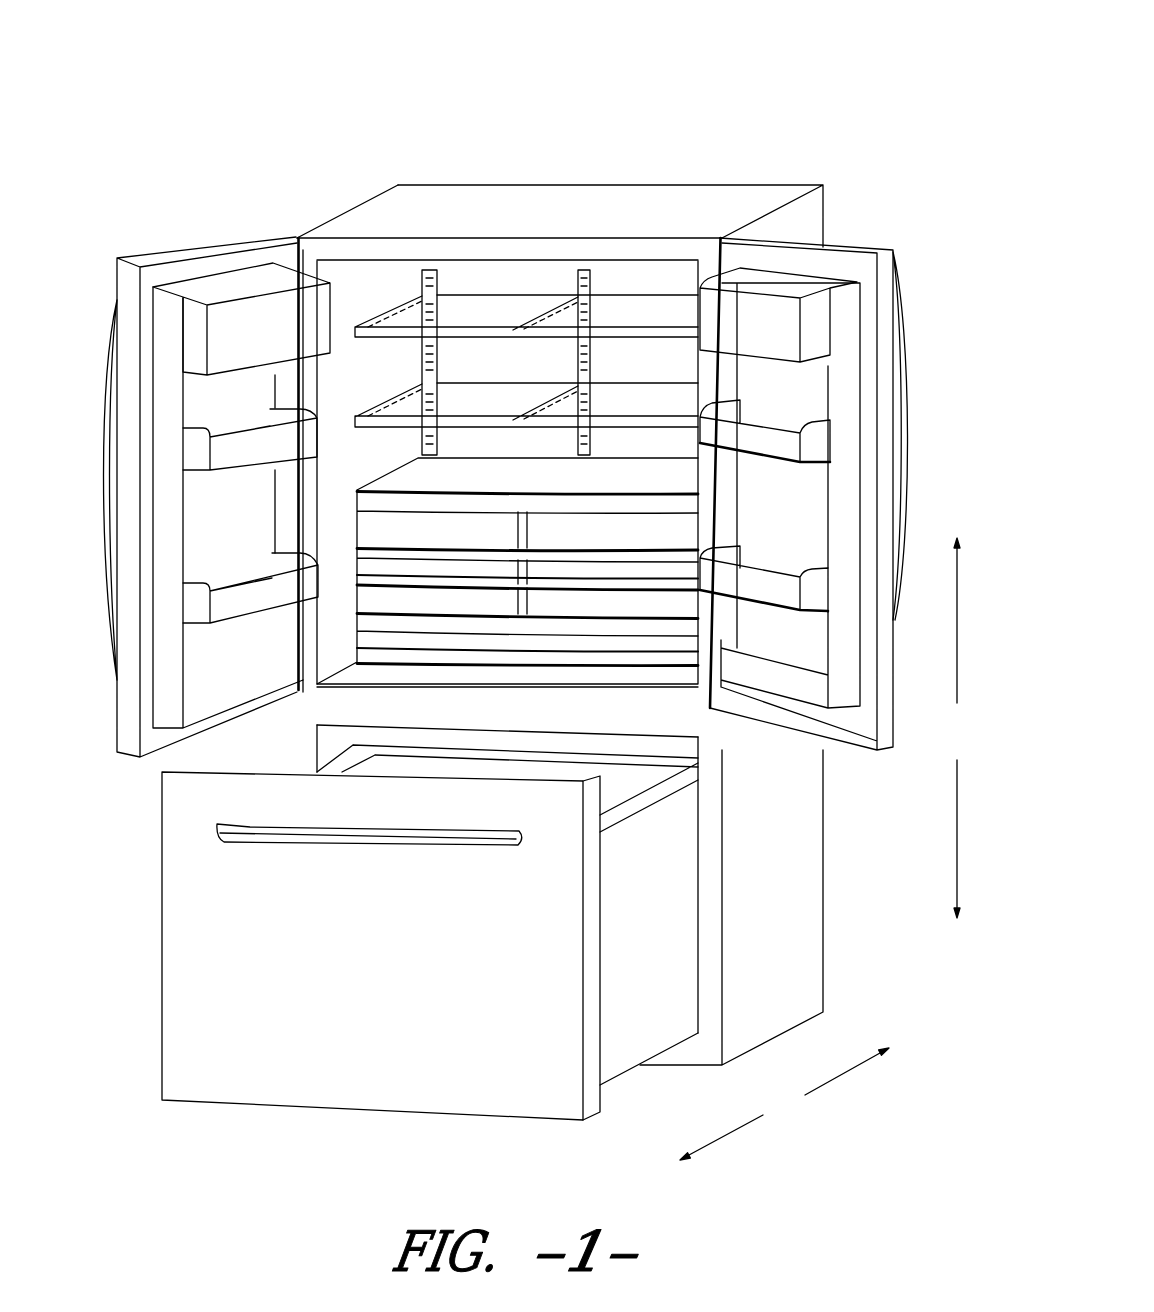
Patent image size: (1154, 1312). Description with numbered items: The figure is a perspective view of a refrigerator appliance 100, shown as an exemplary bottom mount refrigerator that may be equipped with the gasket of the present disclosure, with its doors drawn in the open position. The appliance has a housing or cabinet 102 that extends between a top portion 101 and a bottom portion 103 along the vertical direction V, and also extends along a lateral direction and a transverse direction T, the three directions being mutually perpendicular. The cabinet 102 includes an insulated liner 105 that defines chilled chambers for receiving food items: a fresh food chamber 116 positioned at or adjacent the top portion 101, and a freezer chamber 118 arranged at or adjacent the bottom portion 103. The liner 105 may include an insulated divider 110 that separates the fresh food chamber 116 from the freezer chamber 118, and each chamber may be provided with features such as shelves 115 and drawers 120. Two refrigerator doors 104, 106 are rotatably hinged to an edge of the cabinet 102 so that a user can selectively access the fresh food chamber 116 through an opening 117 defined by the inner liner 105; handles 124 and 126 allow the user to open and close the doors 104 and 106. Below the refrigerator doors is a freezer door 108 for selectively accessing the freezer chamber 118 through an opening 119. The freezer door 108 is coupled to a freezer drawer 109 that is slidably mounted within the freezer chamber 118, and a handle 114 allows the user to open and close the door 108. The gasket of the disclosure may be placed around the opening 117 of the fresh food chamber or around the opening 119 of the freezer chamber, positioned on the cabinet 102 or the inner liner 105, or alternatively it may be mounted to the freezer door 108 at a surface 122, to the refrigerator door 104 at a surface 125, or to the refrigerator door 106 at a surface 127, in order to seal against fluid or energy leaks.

The refrigerator appliance 100 is at (724, 98).
The top portion 101 is at (920, 255).
The cabinet 102 is at (557, 203).
The bottom portion 103 is at (863, 1010).
The refrigerator door 104 is at (145, 253).
The insulated liner 105 is at (351, 279).
The refrigerator door 106 is at (780, 258).
The freezer door 108 is at (290, 1080).
The freezer drawer 109 is at (633, 1035).
The insulated divider 110 is at (652, 745).
The handle 114 is at (328, 842).
The shelves 115 is at (650, 397).
The fresh food chamber 116 is at (494, 278).
The opening 117 is at (383, 236).
The freezer chamber 118 is at (338, 741).
The opening 119 is at (609, 729).
The drawers 120 is at (422, 528).
The surface 122 is at (605, 927).
The handle 124 is at (108, 380).
The surface 125 is at (224, 265).
The handle 126 is at (912, 482).
The surface 127 is at (730, 237).